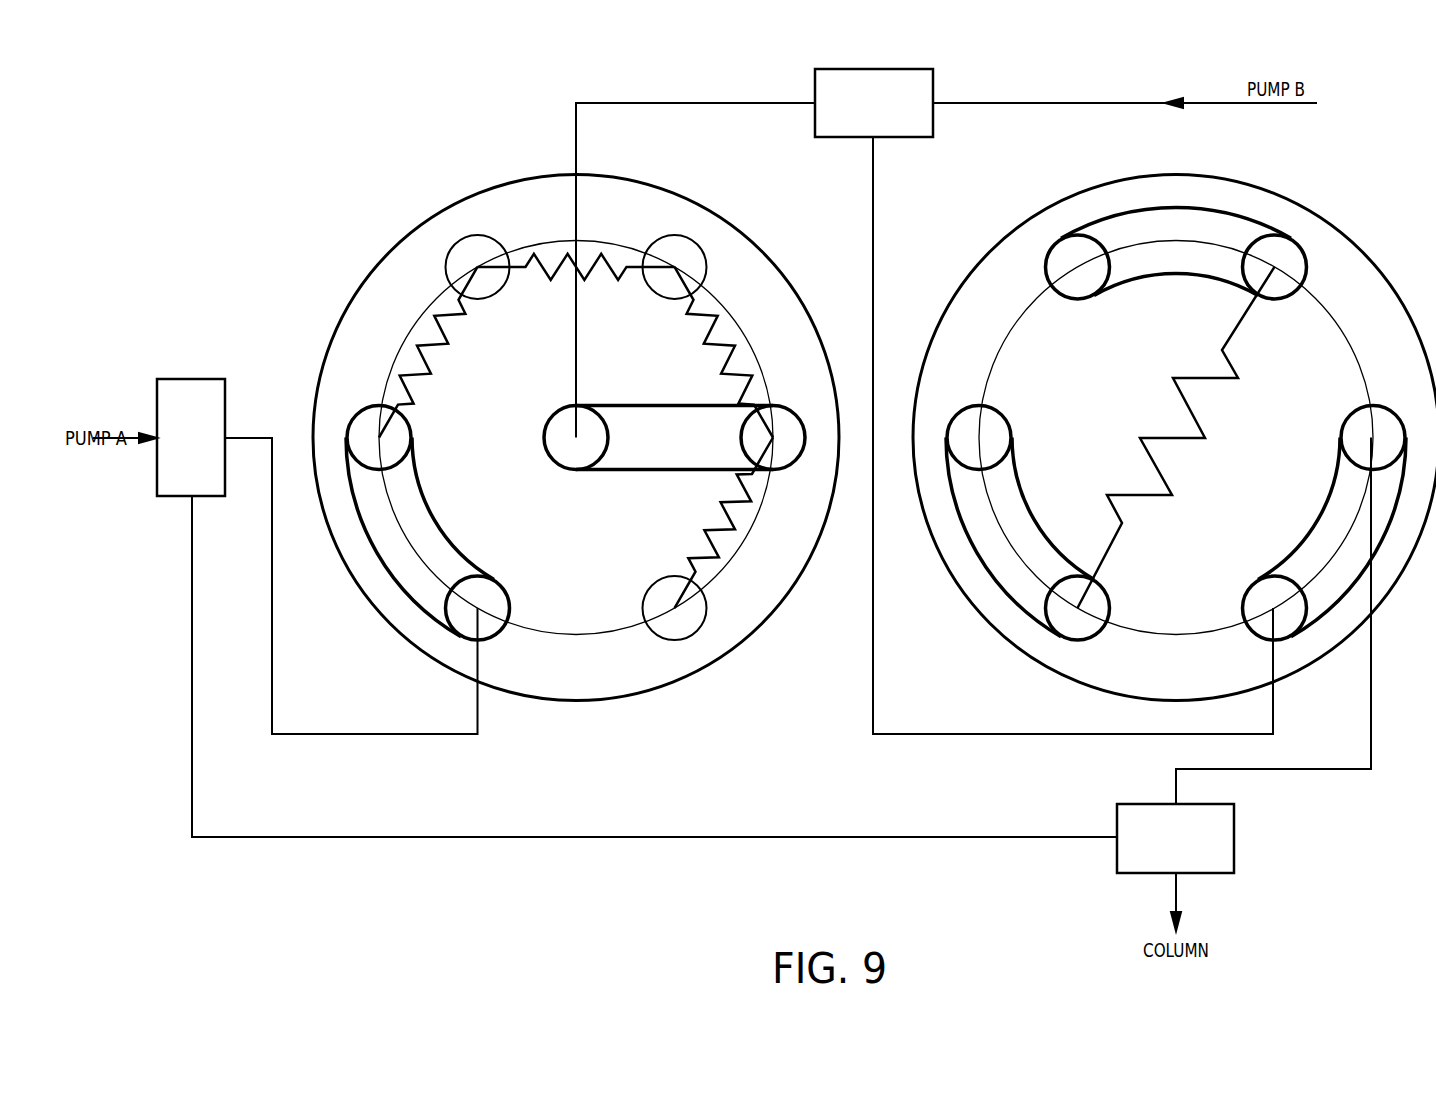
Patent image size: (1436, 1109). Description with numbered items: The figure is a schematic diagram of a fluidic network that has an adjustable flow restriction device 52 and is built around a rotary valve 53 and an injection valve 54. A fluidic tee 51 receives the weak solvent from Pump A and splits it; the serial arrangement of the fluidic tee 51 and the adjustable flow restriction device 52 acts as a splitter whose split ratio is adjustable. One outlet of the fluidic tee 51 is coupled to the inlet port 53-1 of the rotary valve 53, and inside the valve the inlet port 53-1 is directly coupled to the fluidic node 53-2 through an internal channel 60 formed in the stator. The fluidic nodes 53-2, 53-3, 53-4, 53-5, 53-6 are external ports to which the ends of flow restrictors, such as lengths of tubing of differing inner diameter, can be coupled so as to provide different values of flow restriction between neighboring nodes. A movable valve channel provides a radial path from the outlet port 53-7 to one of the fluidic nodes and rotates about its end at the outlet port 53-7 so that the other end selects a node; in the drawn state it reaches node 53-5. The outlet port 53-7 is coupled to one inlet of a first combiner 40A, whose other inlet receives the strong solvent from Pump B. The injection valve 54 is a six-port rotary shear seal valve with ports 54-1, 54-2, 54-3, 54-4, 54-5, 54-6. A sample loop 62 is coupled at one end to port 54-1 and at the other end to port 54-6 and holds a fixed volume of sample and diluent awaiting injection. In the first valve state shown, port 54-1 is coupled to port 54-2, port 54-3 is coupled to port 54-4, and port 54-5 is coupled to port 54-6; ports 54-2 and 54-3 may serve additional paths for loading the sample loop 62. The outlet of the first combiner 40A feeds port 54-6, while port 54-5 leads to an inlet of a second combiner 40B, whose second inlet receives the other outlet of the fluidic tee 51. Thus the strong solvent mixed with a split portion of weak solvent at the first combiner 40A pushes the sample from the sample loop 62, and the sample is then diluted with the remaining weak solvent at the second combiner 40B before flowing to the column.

The first combiner 40A is at (851, 137).
The second combiner 40B is at (1234, 837).
The fluidic tee 51 is at (190, 379).
The adjustable flow restriction device 52 is at (840, 391).
The rotary valve 53 is at (357, 293).
The inlet port 53-1 is at (499, 632).
The fluidic node 53-2 is at (350, 427).
The fluidic node 53-3 is at (456, 243).
The fluidic node 53-4 is at (697, 243).
The fluidic node 53-5 is at (798, 416).
The fluidic node 53-6 is at (642, 607).
The outlet port 53-7 is at (544, 439).
The injection valve 54 is at (1388, 278).
The port 54-1 is at (1099, 632).
The port 54-2 is at (954, 418).
The port 54-3 is at (1056, 243).
The port 54-4 is at (1297, 243).
The port 54-5 is at (1398, 416).
The port 54-6 is at (1242, 607).
The channel 60 is at (430, 522).
The sample loop 62 is at (1146, 438).